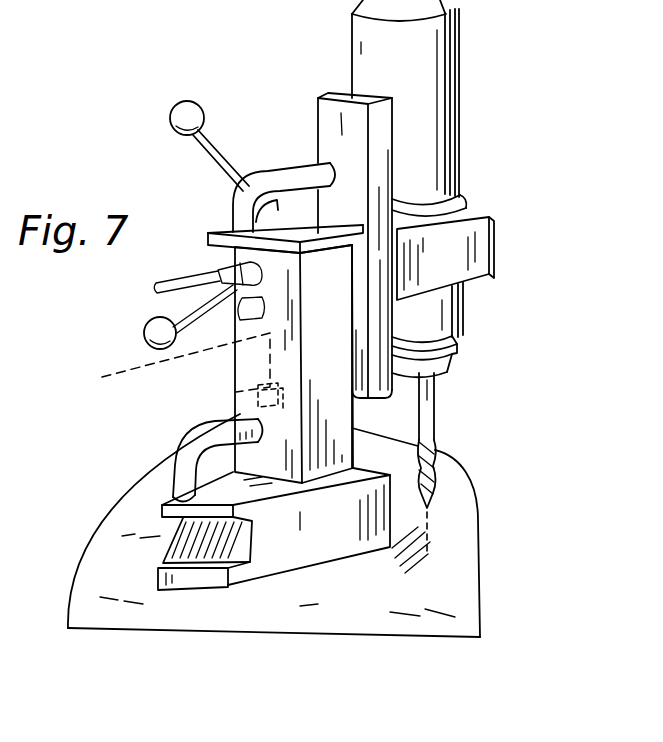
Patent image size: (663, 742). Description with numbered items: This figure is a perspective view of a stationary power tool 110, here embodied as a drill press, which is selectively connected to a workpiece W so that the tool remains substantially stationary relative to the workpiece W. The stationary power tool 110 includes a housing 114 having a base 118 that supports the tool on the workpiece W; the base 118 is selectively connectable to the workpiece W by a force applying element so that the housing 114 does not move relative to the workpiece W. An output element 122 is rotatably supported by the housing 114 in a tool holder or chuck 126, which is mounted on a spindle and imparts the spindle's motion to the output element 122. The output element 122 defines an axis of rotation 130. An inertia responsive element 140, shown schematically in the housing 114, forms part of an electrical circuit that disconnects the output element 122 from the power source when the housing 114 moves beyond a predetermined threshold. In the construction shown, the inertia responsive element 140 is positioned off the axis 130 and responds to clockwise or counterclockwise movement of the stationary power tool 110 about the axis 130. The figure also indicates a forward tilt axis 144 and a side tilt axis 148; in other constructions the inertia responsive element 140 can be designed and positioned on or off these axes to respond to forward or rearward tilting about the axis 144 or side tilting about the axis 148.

The stationary power tool 110 is at (596, 78).
The forward tilt axis 144 is at (382, 243).
The tool holder or chuck 126 is at (457, 362).
The output element 122 is at (433, 400).
The axis of rotation 130 is at (430, 527).
The workpiece W is at (437, 579).
The base 118 is at (320, 533).
The housing 114 is at (245, 356).
The side tilt axis 148 is at (115, 370).
The inertia responsive element 140 is at (258, 396).